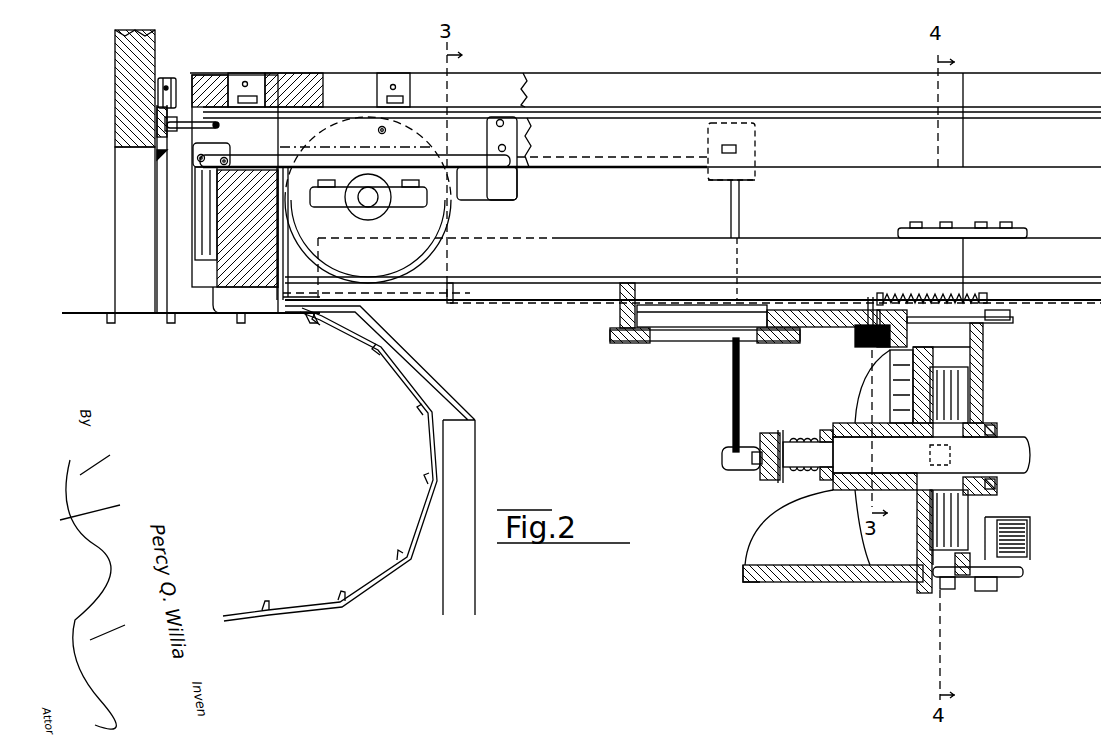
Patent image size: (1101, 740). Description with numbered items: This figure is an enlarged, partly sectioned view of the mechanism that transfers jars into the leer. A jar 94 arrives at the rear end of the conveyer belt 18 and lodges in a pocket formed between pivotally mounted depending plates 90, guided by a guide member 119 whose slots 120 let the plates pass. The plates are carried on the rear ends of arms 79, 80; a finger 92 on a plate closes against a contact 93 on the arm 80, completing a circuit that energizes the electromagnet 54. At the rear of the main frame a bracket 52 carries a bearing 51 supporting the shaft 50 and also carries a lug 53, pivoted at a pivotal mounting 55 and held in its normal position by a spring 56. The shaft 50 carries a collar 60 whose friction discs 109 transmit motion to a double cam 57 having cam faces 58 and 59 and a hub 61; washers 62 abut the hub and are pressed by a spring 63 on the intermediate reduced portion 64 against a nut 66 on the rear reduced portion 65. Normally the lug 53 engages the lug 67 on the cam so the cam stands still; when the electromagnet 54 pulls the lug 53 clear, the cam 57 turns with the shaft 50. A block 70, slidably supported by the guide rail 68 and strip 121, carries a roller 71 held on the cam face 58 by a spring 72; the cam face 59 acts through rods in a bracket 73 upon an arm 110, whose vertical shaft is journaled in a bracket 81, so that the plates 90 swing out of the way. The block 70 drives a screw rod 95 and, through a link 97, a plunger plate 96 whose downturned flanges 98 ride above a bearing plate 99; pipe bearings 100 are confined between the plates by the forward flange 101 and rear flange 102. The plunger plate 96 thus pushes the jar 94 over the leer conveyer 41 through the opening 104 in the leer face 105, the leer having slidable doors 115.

The leer face 105 is at (127, 115).
The finger 92 is at (213, 148).
The opening 104 is at (135, 183).
The depending plates 90 is at (203, 193).
The doors 115 is at (160, 222).
The slots 120 is at (195, 238).
The guide member 119 is at (230, 267).
The conveyer belt 18 is at (240, 300).
The jar 94 is at (268, 302).
The rear flange 102 is at (298, 240).
The contact 93 is at (222, 137).
The arm 80 is at (480, 157).
The arm 79 is at (665, 158).
The bracket 81 is at (763, 175).
The block 70 is at (810, 310).
The spring 72 is at (937, 297).
The bracket 73 is at (933, 318).
The bracket 52 is at (977, 380).
The collar 60 is at (995, 430).
The bearing 51 is at (1007, 433).
The shaft 50 is at (1013, 447).
The friction discs 109 is at (947, 520).
The electromagnet 54 is at (1023, 535).
The lug 53 is at (1023, 570).
The pivotal mounting 55 is at (997, 580).
The spring 56 is at (963, 580).
The lug 67 is at (948, 587).
The cam face 59 is at (928, 593).
The hub 61 is at (855, 533).
The double cam 57 is at (830, 553).
The washers 62 is at (820, 500).
The cam face 58 is at (757, 523).
The nut 66 is at (760, 477).
The arm 110 is at (722, 468).
The rear reduced portion 65 is at (755, 450).
The intermediate reduced portion 64 is at (757, 440).
The spring 63 is at (810, 433).
The roller 71 is at (857, 338).
The screw rod 95 is at (700, 337).
The guide rail 68 is at (682, 318).
The strip 121 is at (660, 327).
The link 97 is at (620, 318).
The plunger plate 96 is at (543, 292).
The flanges 98 is at (490, 300).
The forward flange 101 is at (475, 307).
The bearing plate 99 is at (436, 300).
The pipe bearings 100 is at (400, 300).
The leer conveyer 41 is at (377, 577).